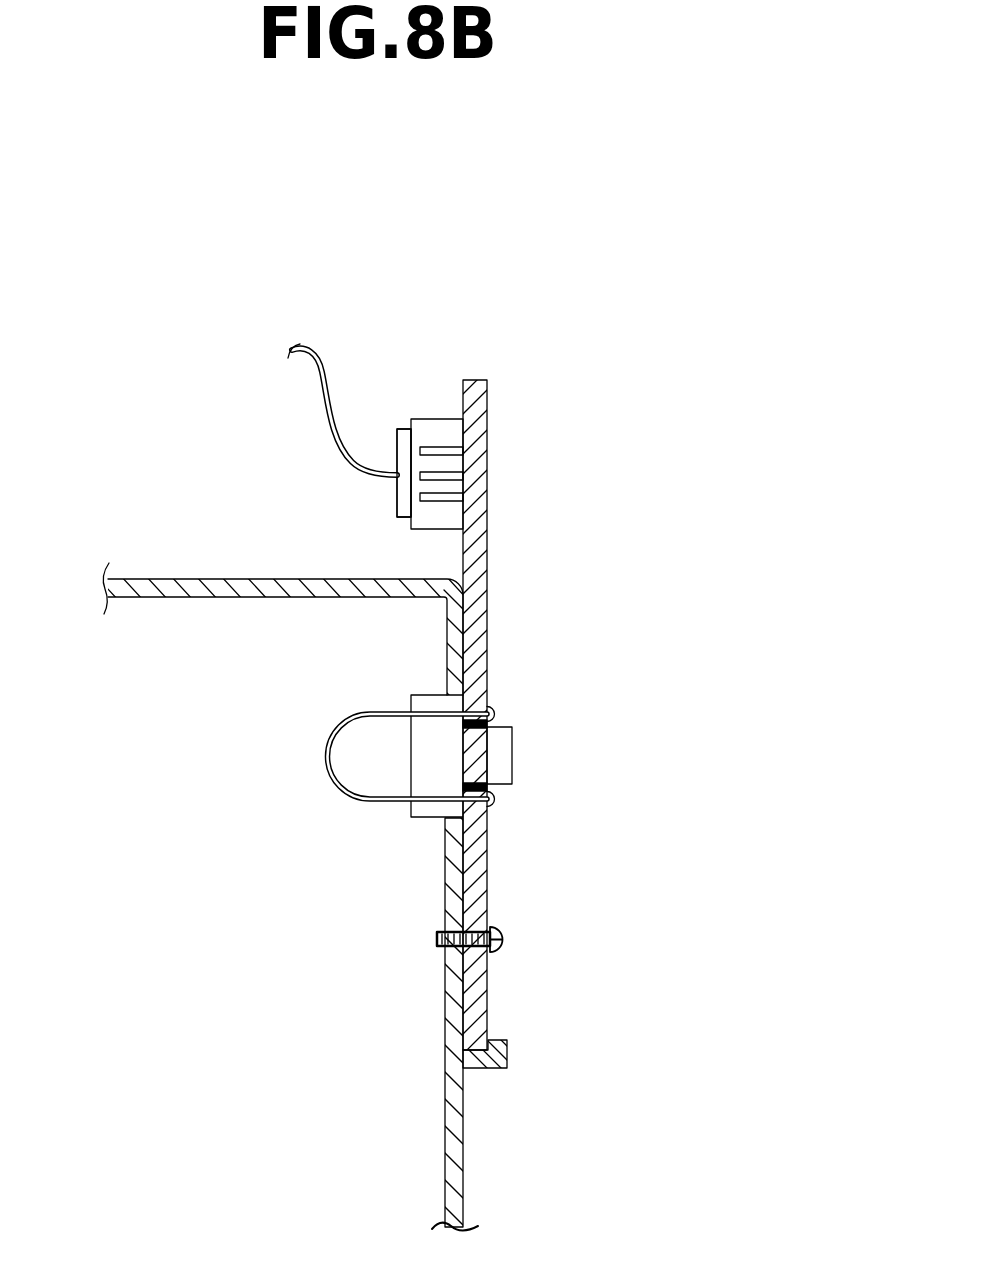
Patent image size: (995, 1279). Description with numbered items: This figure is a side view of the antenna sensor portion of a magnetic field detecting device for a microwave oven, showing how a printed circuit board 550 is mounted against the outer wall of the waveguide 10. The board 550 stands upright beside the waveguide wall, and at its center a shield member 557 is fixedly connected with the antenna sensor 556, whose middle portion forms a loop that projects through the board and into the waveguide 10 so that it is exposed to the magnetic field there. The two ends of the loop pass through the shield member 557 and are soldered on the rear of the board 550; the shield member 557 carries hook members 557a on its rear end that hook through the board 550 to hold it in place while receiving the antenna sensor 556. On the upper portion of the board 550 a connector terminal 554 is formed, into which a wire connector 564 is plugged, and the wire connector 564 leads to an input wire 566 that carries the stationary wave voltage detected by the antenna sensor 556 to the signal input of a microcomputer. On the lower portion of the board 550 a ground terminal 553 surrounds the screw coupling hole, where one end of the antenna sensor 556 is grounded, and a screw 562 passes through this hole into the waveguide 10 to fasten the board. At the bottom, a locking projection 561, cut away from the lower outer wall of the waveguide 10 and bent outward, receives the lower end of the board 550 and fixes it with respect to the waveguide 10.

The waveguide 10 is at (152, 588).
The printed circuit board 550 is at (480, 393).
The ground terminal 553 is at (482, 915).
The connector terminal 554 is at (424, 420).
The antenna sensor 556 is at (329, 767).
The shield member 557 is at (423, 767).
The hook member 557a is at (500, 755).
The locking projection 561 is at (505, 1050).
The screw 562 is at (505, 937).
The wire connector 564 is at (400, 503).
The input wire 566 is at (325, 364).